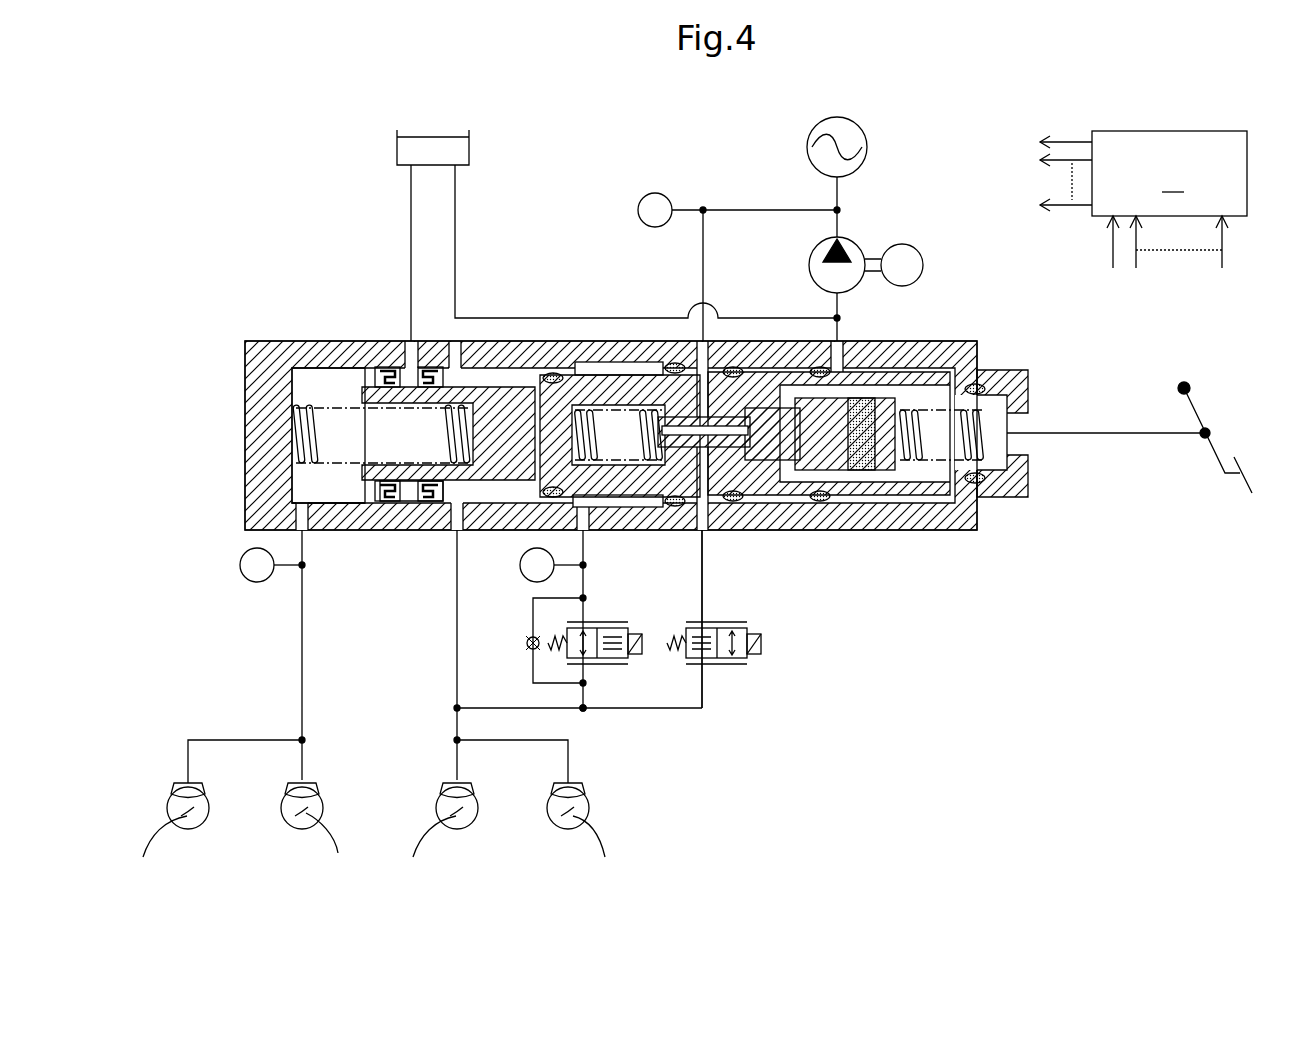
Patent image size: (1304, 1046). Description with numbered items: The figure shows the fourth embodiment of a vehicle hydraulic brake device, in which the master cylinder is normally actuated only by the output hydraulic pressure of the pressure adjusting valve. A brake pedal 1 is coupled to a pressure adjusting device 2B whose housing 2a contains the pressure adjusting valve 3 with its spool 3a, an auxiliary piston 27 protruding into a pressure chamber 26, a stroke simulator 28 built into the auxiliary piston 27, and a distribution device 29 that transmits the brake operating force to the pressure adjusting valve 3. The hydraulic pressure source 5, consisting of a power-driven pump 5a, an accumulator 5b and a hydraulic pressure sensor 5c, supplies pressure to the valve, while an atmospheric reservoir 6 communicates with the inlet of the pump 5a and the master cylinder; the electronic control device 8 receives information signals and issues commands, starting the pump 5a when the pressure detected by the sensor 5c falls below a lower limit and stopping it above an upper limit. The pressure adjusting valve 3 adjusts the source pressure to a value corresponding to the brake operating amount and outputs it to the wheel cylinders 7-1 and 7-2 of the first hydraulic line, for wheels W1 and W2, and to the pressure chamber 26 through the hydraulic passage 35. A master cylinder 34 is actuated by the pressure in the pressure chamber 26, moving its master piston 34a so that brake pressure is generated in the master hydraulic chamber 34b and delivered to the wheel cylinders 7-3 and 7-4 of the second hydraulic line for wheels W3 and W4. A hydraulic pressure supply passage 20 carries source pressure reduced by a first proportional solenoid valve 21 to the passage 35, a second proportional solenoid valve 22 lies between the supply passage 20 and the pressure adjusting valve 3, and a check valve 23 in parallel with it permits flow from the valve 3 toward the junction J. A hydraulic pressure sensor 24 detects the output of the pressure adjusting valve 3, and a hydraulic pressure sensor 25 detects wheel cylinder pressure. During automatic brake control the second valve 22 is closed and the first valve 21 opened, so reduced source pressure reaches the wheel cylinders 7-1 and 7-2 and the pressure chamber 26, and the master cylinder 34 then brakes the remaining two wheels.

The brake pedal 1 is at (1252, 476).
The housing 2a is at (968, 346).
The pressure adjusting device 2B is at (982, 336).
The pressure adjusting valve 3 is at (718, 466).
The spool 3a is at (692, 447).
The hydraulic pressure source 5 is at (867, 200).
The pump 5a is at (862, 246).
The accumulator 5b is at (866, 148).
The hydraulic pressure sensor 5c is at (660, 194).
The atmospheric reservoir 6 is at (470, 136).
The wheel cylinder 7-1 is at (581, 789).
The wheel cylinder 7-2 is at (468, 789).
The wheel cylinder 7-3 is at (313, 789).
The wheel cylinder 7-4 is at (199, 789).
The electronic control device 8 is at (1166, 195).
The hydraulic pressure supply passage 20 is at (703, 692).
The first proportional solenoid valve 21 is at (760, 627).
The second proportional solenoid valve 22 is at (616, 627).
The check valve 23 is at (527, 647).
The hydraulic pressure sensor 24 is at (524, 577).
The hydraulic pressure sensor 25 is at (240, 569).
The pressure chamber 26 is at (500, 493).
The auxiliary piston 27 is at (1029, 379).
The stroke simulator 28 is at (975, 494).
The distribution device 29 is at (858, 482).
The master cylinder 34 is at (369, 384).
The master piston 34a is at (405, 497).
The master hydraulic chamber 34b is at (335, 497).
The hydraulic passage 35 is at (497, 710).
The junction J is at (585, 715).
The vehicle wheel W1 is at (607, 849).
The vehicle wheel W2 is at (430, 854).
The vehicle wheel W3 is at (343, 848).
The vehicle wheel W4 is at (155, 854).